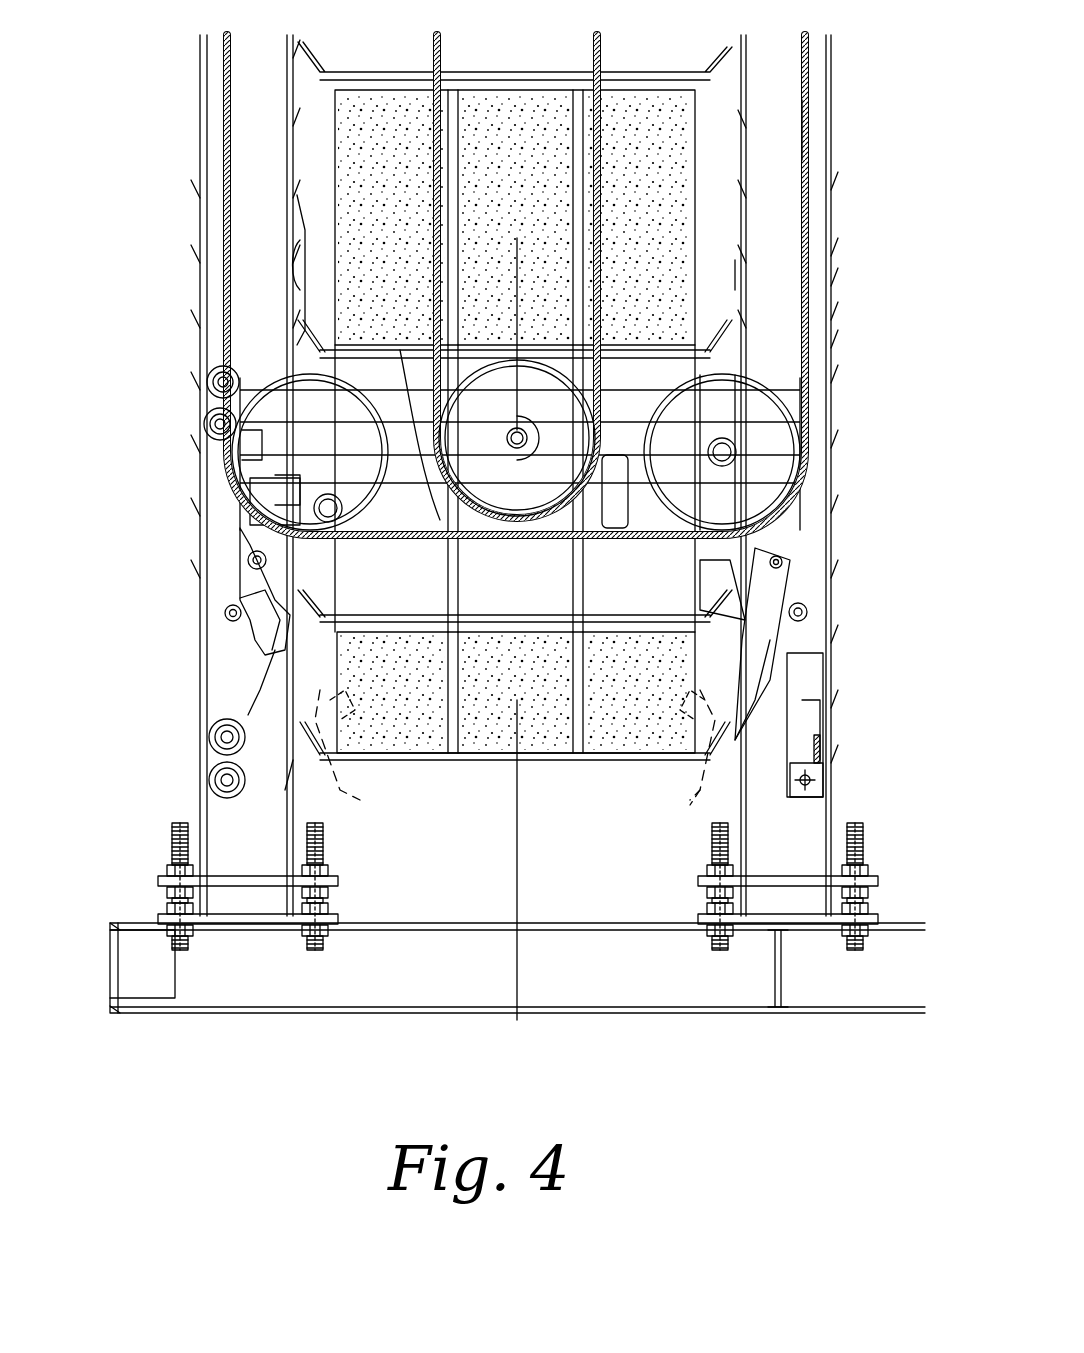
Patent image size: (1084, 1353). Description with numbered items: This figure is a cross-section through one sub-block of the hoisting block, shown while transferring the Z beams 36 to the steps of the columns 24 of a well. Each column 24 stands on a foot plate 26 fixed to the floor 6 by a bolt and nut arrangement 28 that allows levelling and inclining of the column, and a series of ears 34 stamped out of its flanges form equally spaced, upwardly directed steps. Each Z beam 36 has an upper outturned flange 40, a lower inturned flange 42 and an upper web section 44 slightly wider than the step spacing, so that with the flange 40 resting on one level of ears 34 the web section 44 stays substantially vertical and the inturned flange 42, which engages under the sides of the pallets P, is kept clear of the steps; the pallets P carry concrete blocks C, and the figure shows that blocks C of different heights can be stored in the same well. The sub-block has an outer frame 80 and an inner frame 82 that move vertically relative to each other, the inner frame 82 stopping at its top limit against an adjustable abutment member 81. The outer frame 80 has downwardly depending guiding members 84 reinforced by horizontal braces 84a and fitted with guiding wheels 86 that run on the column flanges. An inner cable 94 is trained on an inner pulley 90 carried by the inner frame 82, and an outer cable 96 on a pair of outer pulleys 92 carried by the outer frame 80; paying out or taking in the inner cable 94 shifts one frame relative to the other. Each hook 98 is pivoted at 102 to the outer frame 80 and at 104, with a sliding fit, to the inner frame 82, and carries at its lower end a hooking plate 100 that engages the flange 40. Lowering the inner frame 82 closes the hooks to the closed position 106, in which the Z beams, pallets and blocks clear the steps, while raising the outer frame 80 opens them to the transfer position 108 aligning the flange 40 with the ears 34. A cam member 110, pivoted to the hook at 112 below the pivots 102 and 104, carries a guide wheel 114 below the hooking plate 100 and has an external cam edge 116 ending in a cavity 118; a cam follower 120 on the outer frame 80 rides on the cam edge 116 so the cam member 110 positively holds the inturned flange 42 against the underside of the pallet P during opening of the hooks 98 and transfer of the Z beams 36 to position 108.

The floor 6 is at (708, 985).
The column 24 is at (790, 833).
The foot plate 26 is at (698, 880).
The bolt and nut arrangement 28 is at (712, 898).
The ears 34 is at (835, 335).
The Z beam 36 is at (670, 792).
The upper outturned flange 40 is at (300, 240).
The lower inturned flange 42 is at (335, 350).
The upper web section 44 is at (298, 283).
The outer frame 80 is at (812, 425).
The adjustable abutment member 81 is at (258, 455).
The inner frame 82 is at (290, 487).
The guiding members 84 is at (258, 680).
The horizontal braces 84a is at (805, 720).
The guiding wheels 86 is at (208, 422).
The inner pulley 90 is at (600, 352).
The outer pulleys 92 is at (758, 392).
The inner cable 94 is at (597, 65).
The outer cable 96 is at (802, 152).
The hook 98 is at (257, 568).
The hooking plate 100 is at (325, 735).
The pivot 102 is at (340, 518).
The pivot 104 is at (240, 536).
The closed position 106 is at (692, 718).
The transfer position 108 is at (731, 267).
The cam member 110 is at (240, 680).
The pivot 112 is at (250, 565).
The guide wheel 114 is at (287, 778).
The cam edge 116 is at (800, 640).
The cavity 118 is at (730, 640).
The cam follower 120 is at (226, 615).
The concrete blocks C is at (622, 130).
The pallets P is at (448, 518).